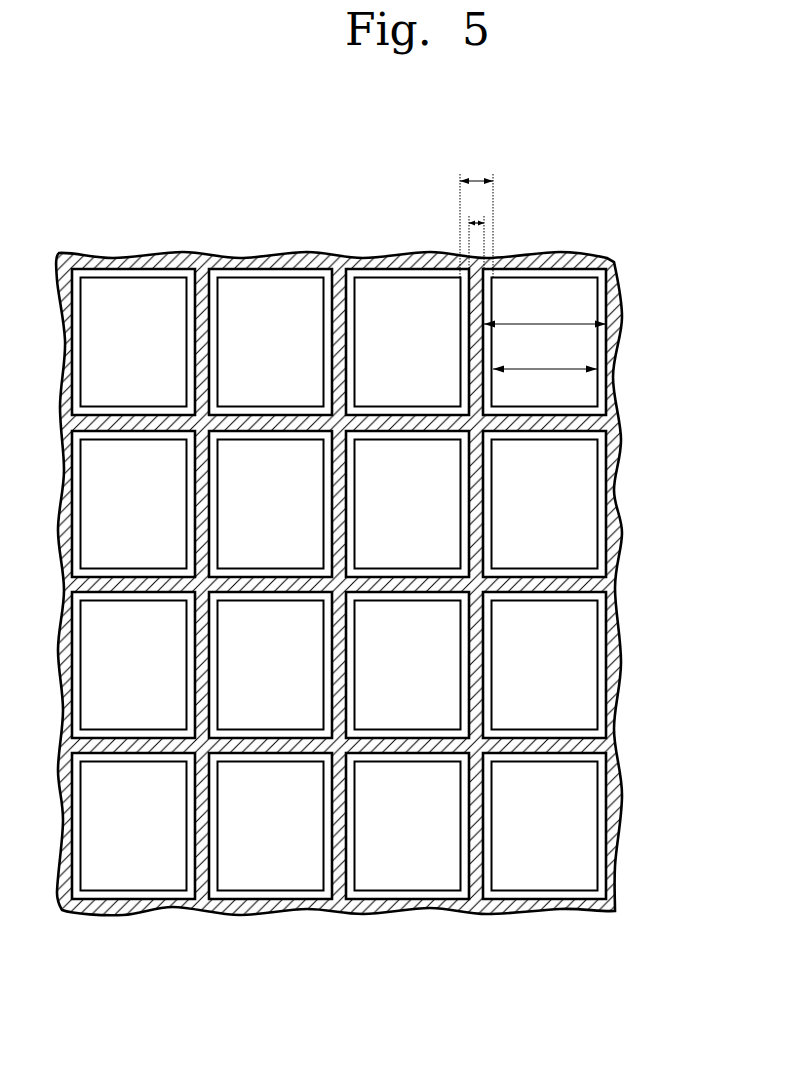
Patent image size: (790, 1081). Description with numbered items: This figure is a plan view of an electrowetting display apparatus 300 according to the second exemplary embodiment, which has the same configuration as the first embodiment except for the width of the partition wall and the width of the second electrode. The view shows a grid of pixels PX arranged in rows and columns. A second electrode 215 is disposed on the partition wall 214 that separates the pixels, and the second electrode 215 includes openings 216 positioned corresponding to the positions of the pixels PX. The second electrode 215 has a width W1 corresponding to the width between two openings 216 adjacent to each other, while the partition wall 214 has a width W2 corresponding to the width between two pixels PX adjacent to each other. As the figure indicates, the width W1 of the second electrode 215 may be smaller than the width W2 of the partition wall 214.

The electrowetting display apparatus 300 is at (594, 156).
The partition wall 214 is at (602, 390).
The second electrode 215 is at (603, 420).
The openings 216 is at (547, 324).
The pixels PX is at (547, 369).
The width of the second electrode W1 is at (477, 234).
The width of the partition wall W2 is at (476, 217).